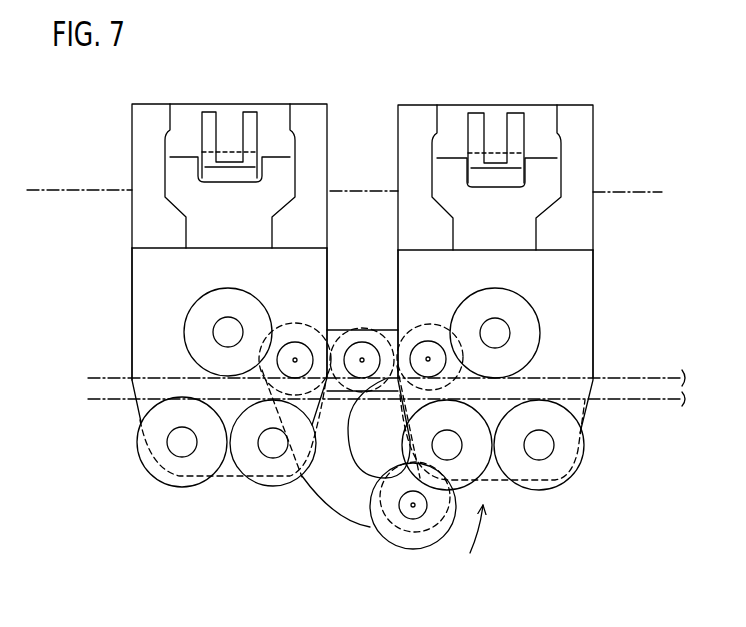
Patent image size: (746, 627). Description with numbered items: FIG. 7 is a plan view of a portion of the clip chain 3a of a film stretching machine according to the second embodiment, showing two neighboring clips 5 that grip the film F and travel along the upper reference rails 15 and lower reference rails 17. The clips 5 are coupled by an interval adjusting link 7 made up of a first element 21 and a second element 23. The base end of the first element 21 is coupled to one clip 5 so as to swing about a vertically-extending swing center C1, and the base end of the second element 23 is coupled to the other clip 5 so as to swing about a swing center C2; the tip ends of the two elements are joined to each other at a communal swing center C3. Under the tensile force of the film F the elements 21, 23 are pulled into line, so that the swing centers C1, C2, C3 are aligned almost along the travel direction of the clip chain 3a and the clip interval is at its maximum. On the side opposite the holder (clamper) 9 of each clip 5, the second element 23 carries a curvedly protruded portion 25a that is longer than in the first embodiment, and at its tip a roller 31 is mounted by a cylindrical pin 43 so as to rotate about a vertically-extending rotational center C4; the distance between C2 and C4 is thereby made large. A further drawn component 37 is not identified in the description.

The clip chain 3a is at (375, 83).
The clip 5 is at (132, 180).
The interval adjusting link 7 is at (360, 270).
The holder (clamper) 9 is at (165, 150).
The unit frame 37 is at (132, 214).
The film F is at (67, 188).
The first element 21 is at (383, 330).
The swing center of the first element C1 is at (428, 357).
The swing center of the second element C2 is at (295, 358).
The communal swing center C3 is at (362, 358).
The rotational center C4 is at (411, 508).
The upper reference rails 15 is at (386, 362).
The lower reference rails 17 is at (633, 378).
The second element 23 is at (315, 497).
The protruded portion 25a is at (335, 515).
The roller 31 is at (422, 550).
The cylindrical pin 43 is at (422, 517).